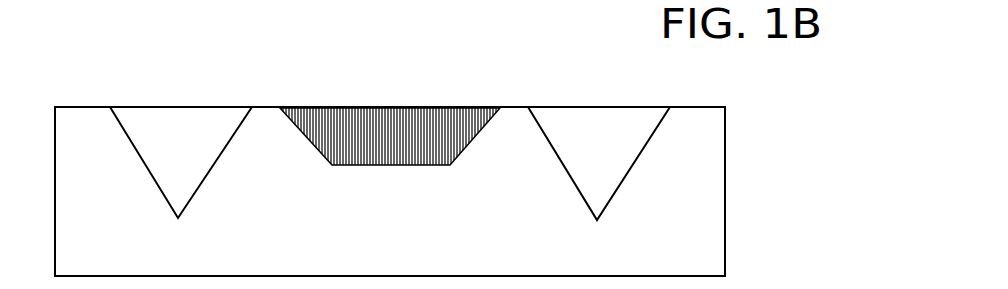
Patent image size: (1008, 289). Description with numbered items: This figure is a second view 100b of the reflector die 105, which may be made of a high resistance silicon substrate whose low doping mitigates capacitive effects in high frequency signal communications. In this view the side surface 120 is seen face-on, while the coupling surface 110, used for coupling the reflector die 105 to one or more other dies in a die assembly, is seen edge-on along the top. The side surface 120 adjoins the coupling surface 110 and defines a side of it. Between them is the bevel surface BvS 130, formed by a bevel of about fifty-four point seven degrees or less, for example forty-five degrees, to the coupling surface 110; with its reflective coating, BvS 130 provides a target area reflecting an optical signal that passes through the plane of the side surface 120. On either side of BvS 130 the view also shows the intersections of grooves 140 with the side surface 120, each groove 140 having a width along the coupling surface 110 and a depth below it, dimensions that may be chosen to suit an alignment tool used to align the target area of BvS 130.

The second view 100b is at (780, 133).
The reflector die 105 is at (248, 273).
The coupling surface 110 is at (518, 107).
The side surface 120 is at (697, 248).
The bevel surface BvS 130 is at (374, 160).
The groove 140 is at (619, 168).